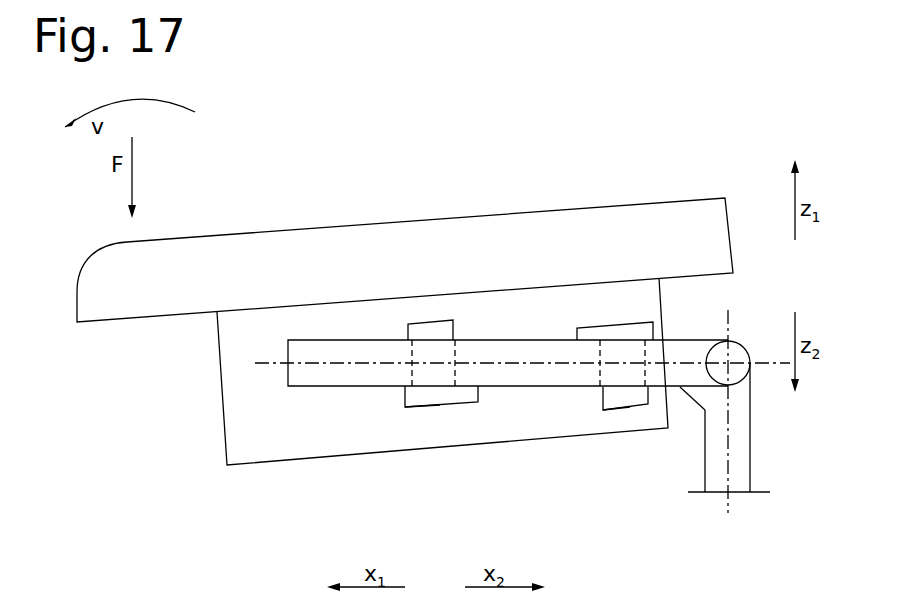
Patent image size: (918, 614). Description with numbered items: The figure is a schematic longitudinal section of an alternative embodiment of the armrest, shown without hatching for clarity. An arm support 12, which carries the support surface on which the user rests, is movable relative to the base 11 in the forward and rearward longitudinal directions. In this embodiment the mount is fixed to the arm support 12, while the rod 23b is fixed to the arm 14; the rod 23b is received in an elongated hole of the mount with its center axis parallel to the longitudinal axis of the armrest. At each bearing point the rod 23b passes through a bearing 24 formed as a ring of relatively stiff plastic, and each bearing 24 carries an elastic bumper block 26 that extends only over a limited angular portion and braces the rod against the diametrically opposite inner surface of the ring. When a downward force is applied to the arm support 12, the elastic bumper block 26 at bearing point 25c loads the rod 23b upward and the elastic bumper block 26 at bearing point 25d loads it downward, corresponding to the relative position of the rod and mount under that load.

The base 11 is at (720, 462).
The arm support 12 is at (421, 195).
The arm 14 is at (322, 372).
The rod 23b is at (517, 375).
The bearing 24 is at (410, 323).
The elastic bumper block 26 is at (618, 335).
The bearing point 25c is at (424, 408).
The bearing point 25d is at (600, 418).